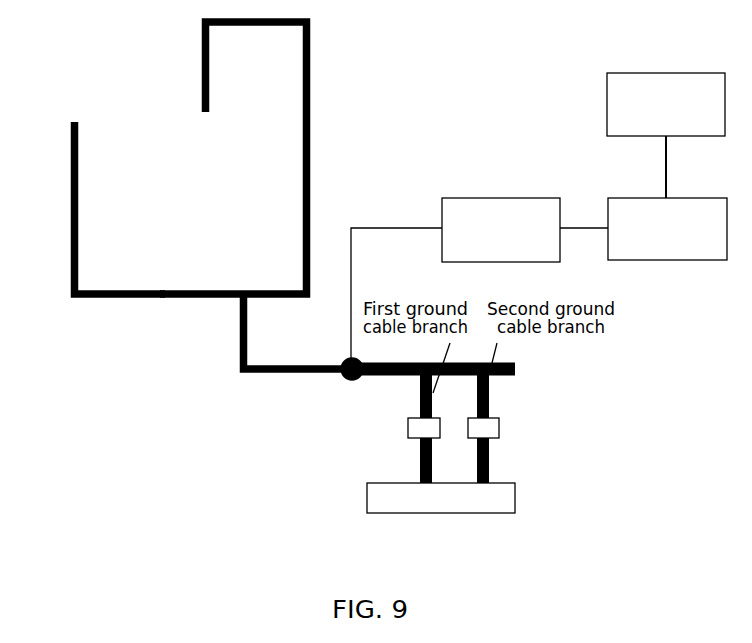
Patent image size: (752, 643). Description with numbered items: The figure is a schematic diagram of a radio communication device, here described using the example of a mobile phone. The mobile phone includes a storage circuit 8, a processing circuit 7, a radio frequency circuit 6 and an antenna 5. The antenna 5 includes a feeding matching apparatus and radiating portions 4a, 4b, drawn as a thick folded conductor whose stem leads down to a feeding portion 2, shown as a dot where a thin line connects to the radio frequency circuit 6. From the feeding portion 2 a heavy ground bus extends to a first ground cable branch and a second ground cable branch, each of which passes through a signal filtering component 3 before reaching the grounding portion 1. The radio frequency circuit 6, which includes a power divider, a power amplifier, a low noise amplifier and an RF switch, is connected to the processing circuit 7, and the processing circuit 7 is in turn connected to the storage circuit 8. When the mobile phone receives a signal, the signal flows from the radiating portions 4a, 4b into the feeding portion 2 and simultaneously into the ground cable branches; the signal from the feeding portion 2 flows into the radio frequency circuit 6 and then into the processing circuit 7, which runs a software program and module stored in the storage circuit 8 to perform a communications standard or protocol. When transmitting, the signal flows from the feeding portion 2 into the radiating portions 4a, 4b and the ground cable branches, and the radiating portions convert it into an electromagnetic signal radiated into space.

The grounding portion 1 is at (472, 513).
The feeding portion 2 is at (342, 378).
The signal filtering component 3 is at (435, 432).
The radiating portion 4a is at (70, 215).
The radiating portion 4b is at (310, 168).
The antenna 5 is at (197, 232).
The radio frequency circuit 6 is at (505, 198).
The processing circuit 7 is at (638, 198).
The storage circuit 8 is at (625, 73).